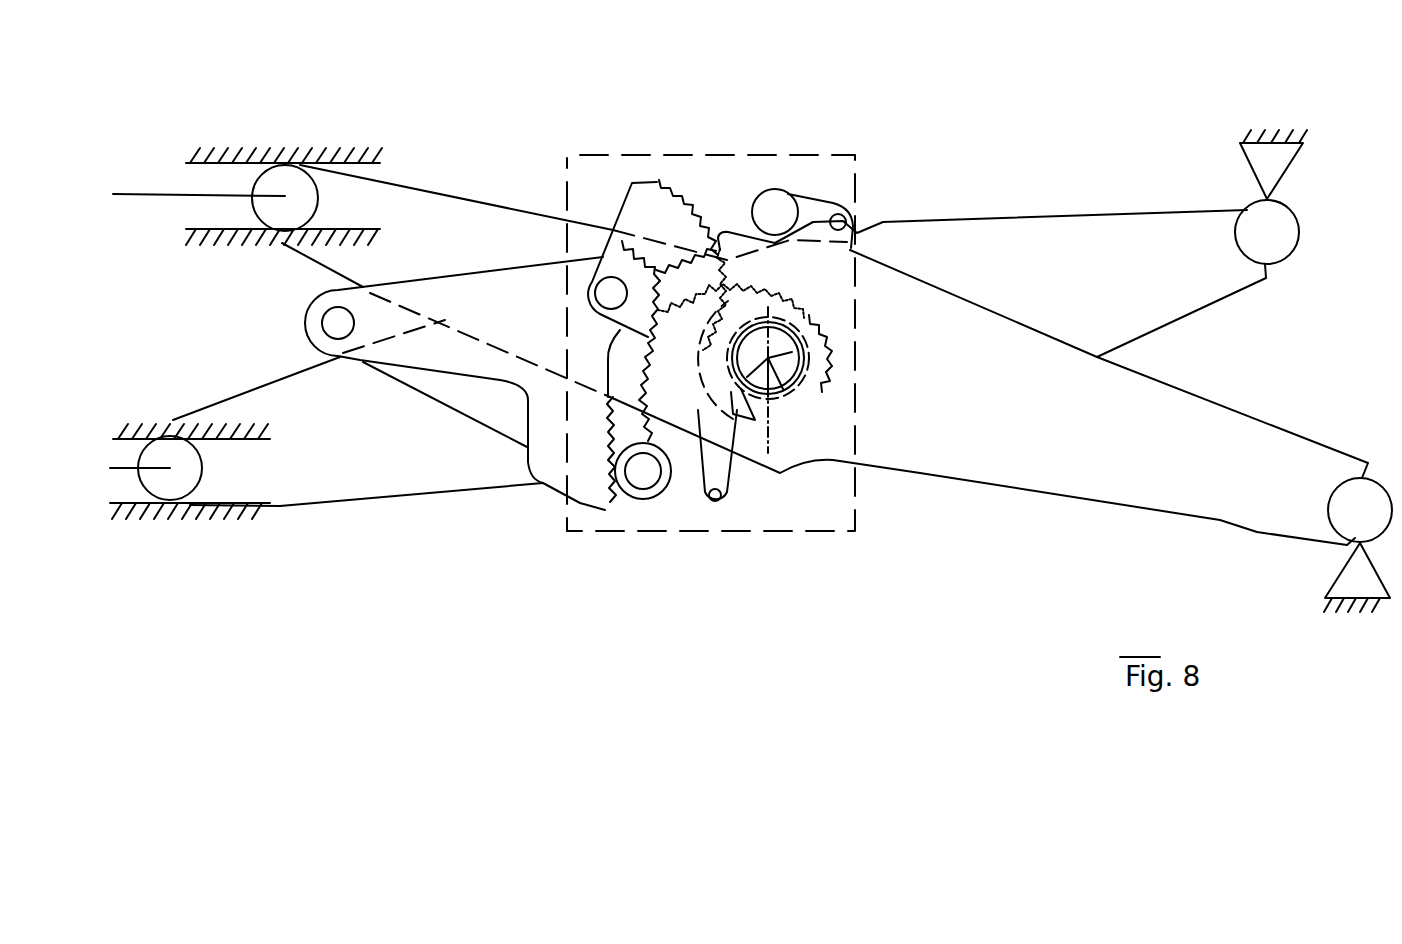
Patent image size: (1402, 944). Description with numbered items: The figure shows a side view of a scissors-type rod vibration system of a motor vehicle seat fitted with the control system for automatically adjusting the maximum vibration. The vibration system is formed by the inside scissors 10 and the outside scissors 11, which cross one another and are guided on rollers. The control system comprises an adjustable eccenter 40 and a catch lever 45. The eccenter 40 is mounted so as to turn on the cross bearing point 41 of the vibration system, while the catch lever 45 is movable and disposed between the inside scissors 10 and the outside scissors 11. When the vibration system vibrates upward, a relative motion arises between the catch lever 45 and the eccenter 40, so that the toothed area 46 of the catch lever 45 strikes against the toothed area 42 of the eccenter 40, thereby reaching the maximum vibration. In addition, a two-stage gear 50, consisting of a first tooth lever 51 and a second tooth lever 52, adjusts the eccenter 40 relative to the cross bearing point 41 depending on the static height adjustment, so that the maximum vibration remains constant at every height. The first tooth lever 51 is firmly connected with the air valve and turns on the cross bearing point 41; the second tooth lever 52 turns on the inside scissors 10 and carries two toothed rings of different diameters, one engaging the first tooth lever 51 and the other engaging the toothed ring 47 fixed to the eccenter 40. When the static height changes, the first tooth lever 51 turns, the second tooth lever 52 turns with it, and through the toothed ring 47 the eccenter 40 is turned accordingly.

The inside scissors 10 is at (1109, 304).
The outside scissors 11 is at (1001, 504).
The adjustable eccenter 40 is at (652, 330).
The cross bearing point 41 is at (772, 360).
The toothed area of the eccenter 42 is at (653, 450).
The catch lever 45 is at (535, 345).
The toothed area of the catch lever 46 is at (657, 410).
The toothed ring 47 is at (797, 320).
The two-stage gear 50 is at (590, 177).
The first tooth lever 51 is at (810, 272).
The second tooth lever 52 is at (650, 218).